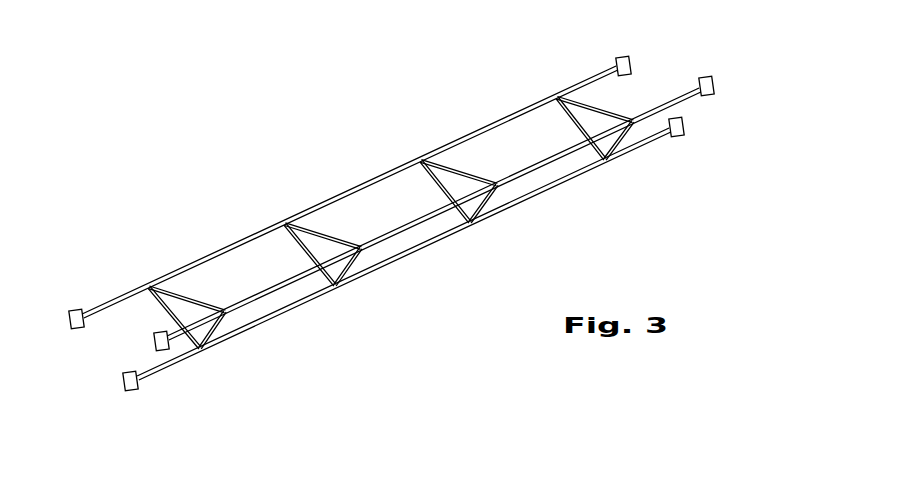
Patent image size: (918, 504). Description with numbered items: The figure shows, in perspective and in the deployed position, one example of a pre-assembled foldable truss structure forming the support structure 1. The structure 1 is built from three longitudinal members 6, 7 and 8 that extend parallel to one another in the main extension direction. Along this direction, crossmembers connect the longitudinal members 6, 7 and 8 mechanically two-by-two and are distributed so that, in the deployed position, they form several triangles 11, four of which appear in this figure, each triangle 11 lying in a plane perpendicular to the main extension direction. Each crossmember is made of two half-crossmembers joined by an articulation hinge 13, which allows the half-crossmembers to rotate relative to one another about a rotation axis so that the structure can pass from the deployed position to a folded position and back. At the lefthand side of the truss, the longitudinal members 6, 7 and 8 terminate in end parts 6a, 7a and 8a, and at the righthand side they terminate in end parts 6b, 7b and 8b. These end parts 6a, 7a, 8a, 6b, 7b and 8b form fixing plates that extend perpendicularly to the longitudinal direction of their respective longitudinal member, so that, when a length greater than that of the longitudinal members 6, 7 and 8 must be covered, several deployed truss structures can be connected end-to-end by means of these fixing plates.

The support structure 1 is at (458, 250).
The longitudinal member 6 is at (540, 193).
The end part of longitudinal member 6 6a is at (124, 382).
The end part of longitudinal member 6 6b is at (684, 125).
The longitudinal member 7 is at (569, 152).
The end part of longitudinal member 7 7a is at (154, 343).
The end part of longitudinal member 7 7b is at (714, 84).
The longitudinal member 8 is at (373, 180).
The end part of longitudinal member 8 8a is at (69, 316).
The end part of longitudinal member 8 8b is at (631, 63).
The triangle 11 is at (152, 305).
The articulation hinge 13 is at (178, 295).